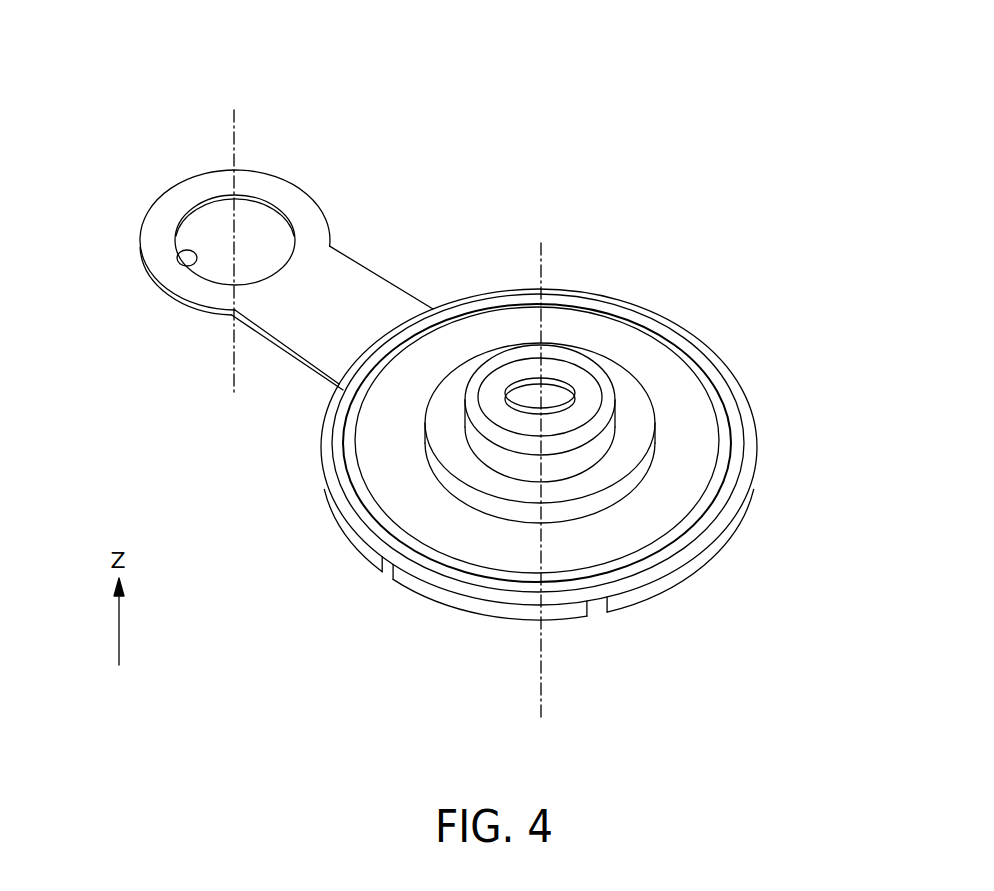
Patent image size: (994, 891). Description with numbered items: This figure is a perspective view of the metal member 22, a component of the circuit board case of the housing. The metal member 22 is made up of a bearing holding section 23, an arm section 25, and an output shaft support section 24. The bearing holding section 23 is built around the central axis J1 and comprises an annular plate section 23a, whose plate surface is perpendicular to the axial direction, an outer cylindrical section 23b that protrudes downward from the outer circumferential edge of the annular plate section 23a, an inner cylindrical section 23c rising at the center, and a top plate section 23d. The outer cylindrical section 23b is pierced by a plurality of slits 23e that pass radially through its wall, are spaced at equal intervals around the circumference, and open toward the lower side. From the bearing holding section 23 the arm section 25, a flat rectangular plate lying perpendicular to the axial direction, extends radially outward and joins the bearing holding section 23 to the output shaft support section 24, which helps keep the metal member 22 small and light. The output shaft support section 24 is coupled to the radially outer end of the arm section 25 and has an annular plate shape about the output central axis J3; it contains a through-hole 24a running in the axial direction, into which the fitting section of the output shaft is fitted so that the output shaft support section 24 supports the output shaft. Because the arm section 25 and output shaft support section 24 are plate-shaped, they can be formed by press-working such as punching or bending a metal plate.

The metal member 22 is at (740, 282).
The bearing holding section 23 is at (743, 385).
The annular plate section 23a is at (687, 478).
The outer cylindrical section 23b is at (567, 612).
The inner cylindrical section 23c is at (610, 428).
The top plate section 23d is at (573, 363).
The slits 23e is at (388, 572).
The output shaft support section 24 is at (270, 190).
The through-hole 24a is at (198, 262).
The arm section 25 is at (373, 307).
The central axis J1 is at (542, 266).
The output central axis J3 is at (235, 129).